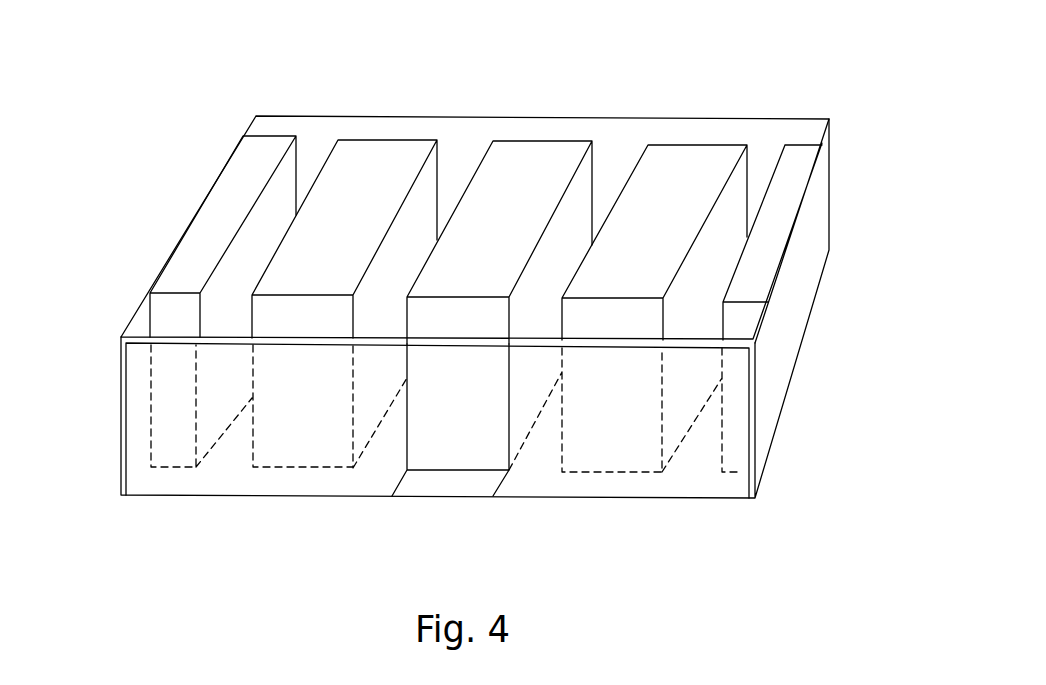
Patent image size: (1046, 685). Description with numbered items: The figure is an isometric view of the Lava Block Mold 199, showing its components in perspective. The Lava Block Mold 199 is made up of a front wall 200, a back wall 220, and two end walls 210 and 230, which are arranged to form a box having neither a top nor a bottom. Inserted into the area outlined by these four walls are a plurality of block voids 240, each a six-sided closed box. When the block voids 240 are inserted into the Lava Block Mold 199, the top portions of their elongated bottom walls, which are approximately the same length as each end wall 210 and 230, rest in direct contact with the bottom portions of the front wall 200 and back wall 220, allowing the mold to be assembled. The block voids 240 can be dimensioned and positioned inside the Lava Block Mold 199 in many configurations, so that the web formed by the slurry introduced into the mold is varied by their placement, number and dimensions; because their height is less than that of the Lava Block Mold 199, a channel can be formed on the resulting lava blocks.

The Lava Block Mold 199 is at (122, 418).
The front wall 200 is at (197, 448).
The end wall 210 is at (768, 390).
The back wall 220 is at (727, 118).
The end wall 230 is at (183, 255).
The block voids 240 is at (540, 167).